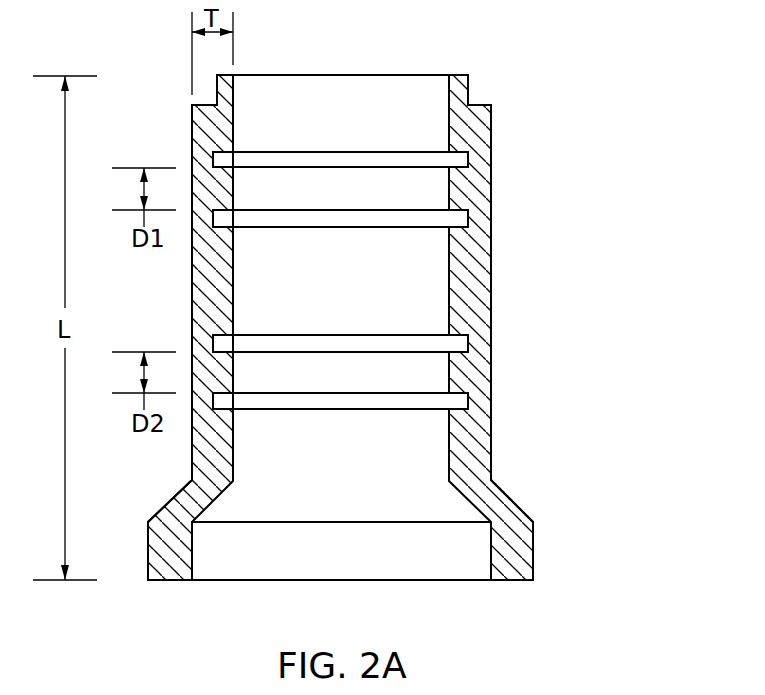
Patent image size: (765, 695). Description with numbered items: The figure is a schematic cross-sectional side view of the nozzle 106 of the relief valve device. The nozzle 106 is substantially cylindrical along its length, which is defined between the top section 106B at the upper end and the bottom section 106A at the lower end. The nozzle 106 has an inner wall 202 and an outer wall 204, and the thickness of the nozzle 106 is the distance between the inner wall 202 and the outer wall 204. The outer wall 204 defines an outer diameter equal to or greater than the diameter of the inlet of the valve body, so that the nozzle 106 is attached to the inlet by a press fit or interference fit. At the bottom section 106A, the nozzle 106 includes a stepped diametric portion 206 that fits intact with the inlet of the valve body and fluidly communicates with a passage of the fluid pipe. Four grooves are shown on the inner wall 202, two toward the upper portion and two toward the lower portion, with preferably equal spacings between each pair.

The nozzle 106 is at (538, 49).
The bottom section 106A is at (365, 581).
The top section 106B is at (340, 75).
The inner wall 202 is at (233, 103).
The outer wall 204 is at (491, 131).
The stepped diametric portion 206 is at (533, 548).